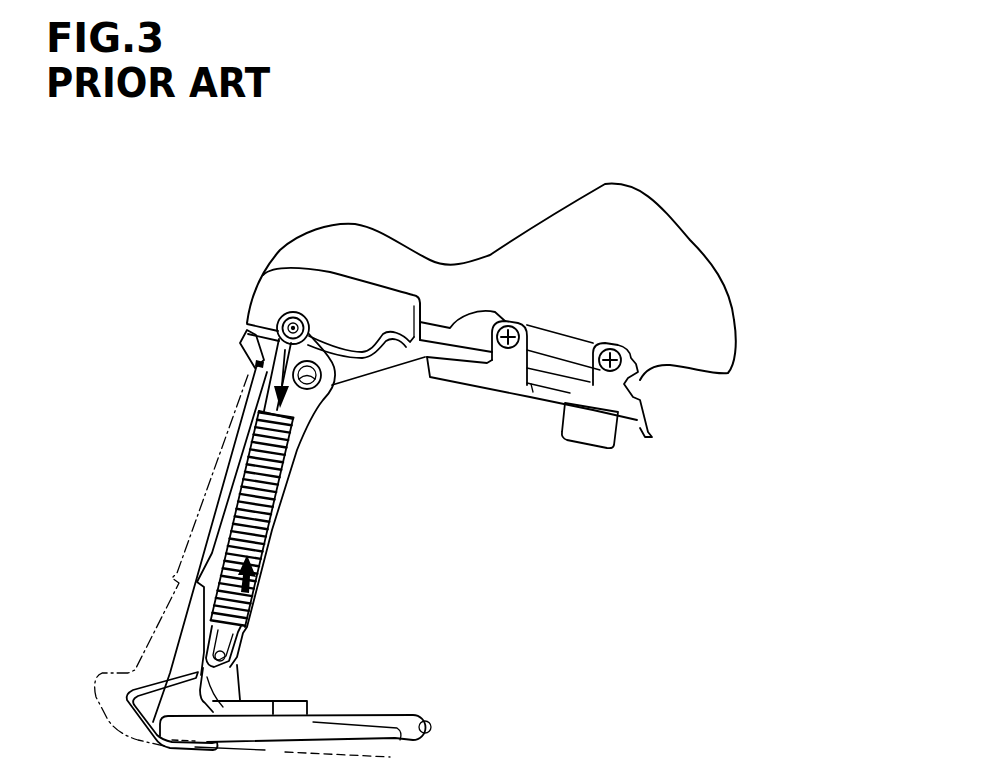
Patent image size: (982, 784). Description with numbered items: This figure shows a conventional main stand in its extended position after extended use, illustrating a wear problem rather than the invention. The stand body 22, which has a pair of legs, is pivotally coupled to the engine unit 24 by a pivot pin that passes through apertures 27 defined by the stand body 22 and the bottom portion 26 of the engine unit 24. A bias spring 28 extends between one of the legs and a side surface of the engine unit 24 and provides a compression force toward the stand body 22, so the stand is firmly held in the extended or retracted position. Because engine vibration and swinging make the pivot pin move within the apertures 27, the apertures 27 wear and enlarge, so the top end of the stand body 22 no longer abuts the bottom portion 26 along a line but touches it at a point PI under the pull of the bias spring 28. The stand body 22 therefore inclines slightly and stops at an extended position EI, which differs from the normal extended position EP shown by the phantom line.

The stand body 22 is at (203, 548).
The engine unit 24 is at (380, 262).
The bottom portion 26 is at (352, 370).
The apertures 27 is at (328, 384).
The bias spring 28 is at (276, 513).
The point PI is at (252, 346).
The normal extended position EP is at (209, 478).
The extended position EI is at (224, 461).